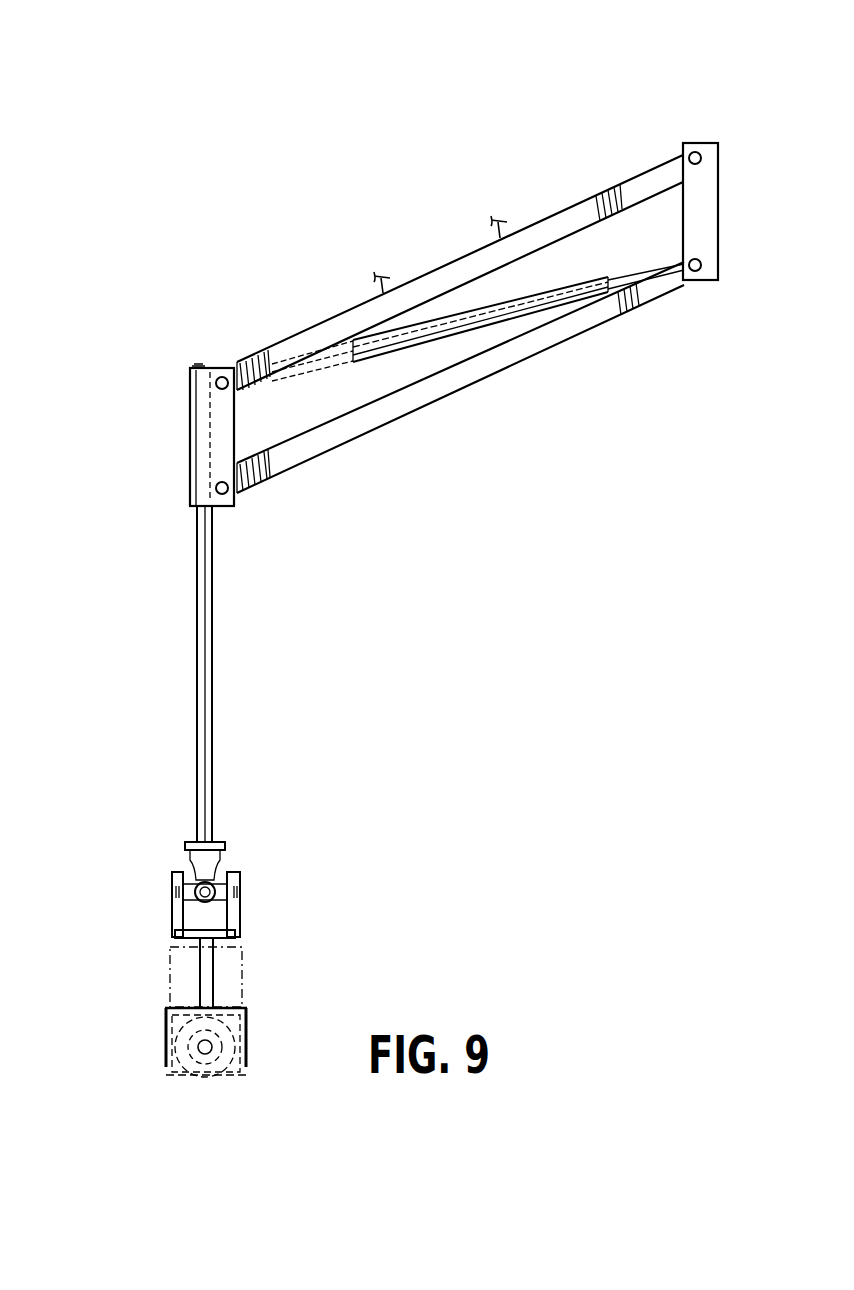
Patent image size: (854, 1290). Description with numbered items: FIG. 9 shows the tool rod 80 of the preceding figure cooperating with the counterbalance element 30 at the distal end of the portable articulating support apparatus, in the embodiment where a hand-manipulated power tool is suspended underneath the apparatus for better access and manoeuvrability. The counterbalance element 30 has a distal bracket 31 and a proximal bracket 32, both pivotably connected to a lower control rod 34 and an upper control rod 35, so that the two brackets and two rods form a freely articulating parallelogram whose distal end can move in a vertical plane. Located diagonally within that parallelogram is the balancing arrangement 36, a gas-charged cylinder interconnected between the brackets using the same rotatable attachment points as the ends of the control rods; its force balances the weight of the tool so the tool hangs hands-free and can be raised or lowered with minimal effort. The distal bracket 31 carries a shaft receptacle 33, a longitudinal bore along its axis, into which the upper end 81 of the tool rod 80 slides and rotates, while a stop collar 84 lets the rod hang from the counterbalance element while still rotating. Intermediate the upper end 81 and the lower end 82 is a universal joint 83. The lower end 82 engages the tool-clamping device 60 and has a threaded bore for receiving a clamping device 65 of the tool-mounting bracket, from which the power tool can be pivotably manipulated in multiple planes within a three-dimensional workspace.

The counterbalance element 30 is at (462, 219).
The distal bracket 31 is at (188, 467).
The proximal bracket 32 is at (707, 200).
The shaft receptacle 33 is at (190, 437).
The lower control rod 34 is at (513, 357).
The upper control rod 35 is at (567, 220).
The balancing arrangement 36 is at (477, 317).
The tool-clamping device 60 is at (250, 1038).
The clamping device 65 is at (213, 1062).
The tool rod 80 is at (258, 735).
The upper end 81 is at (213, 625).
The lower end 82 is at (200, 993).
The universal joint 83 is at (262, 840).
The stop collar 84 is at (190, 367).